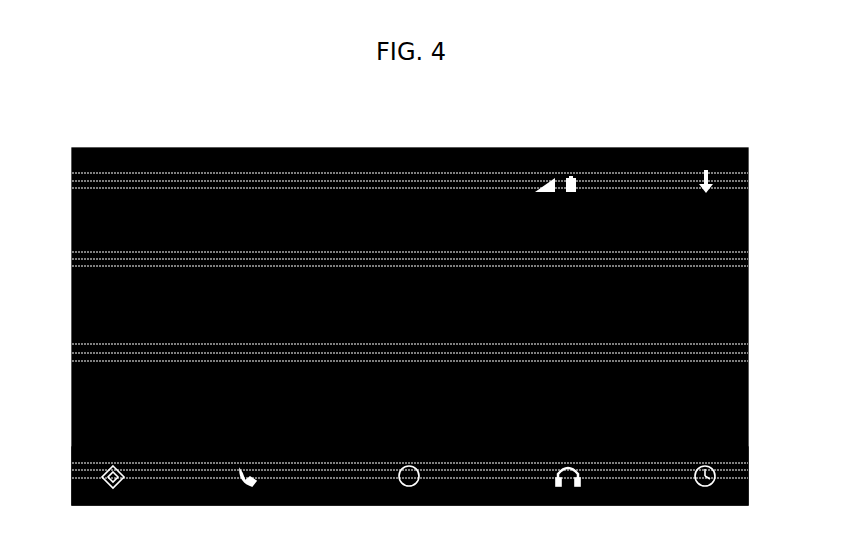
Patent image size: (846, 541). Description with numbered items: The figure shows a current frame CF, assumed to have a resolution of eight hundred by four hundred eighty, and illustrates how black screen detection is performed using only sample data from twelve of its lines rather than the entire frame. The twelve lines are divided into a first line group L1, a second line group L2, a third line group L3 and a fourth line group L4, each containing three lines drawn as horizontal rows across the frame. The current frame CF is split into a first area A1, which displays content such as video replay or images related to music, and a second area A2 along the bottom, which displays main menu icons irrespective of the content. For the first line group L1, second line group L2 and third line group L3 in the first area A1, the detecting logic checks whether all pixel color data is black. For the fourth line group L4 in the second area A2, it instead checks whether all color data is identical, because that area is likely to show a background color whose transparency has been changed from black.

The current frame CF is at (515, 148).
The first area A1 is at (752, 447).
The second area A2 is at (752, 449).
The first line group L1 is at (68, 170).
The second line group L2 is at (68, 249).
The third line group L3 is at (68, 342).
The fourth line group L4 is at (68, 461).